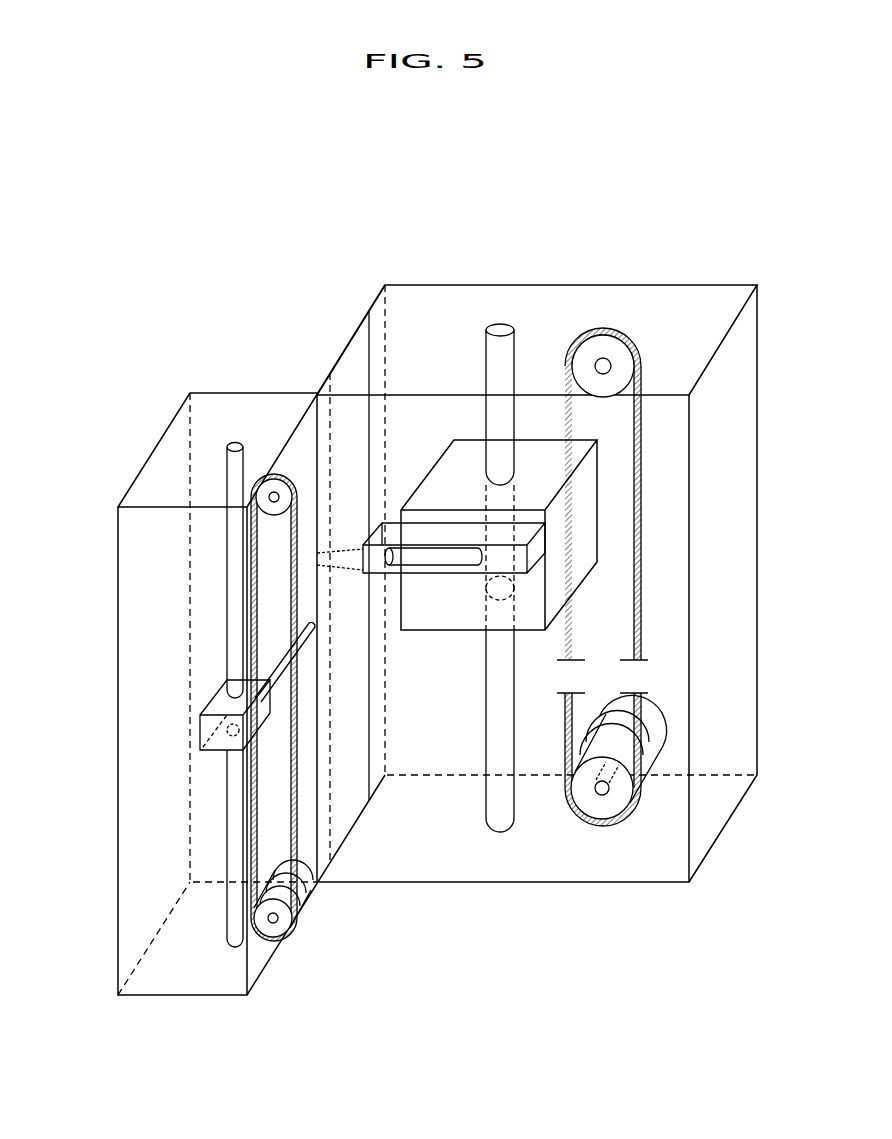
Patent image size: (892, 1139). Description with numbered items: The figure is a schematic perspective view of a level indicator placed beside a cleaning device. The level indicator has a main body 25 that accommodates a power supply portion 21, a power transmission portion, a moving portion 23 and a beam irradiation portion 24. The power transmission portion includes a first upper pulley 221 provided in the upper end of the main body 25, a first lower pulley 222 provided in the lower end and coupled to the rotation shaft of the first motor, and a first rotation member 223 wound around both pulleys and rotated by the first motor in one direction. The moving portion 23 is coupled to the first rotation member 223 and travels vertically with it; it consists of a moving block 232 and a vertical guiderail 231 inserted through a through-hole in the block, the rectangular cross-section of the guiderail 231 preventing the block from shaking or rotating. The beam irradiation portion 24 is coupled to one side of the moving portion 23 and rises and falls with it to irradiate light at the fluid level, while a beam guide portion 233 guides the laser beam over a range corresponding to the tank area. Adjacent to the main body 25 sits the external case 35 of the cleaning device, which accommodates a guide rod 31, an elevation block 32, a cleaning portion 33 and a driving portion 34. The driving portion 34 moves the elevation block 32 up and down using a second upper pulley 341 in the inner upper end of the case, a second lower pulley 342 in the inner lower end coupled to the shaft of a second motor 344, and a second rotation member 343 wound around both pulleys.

The power supply portion 21 is at (655, 732).
The first upper pulley 221 is at (602, 345).
The first lower pulley 222 is at (617, 800).
The first rotation member 223 is at (640, 495).
The moving portion 23 is at (429, 516).
The guiderail 231 is at (484, 350).
The moving block 232 is at (433, 478).
The beam guide portion 233 is at (373, 517).
The beam irradiation portion 24 is at (465, 563).
The main body 25 is at (715, 285).
The guide rod 31 is at (235, 923).
The elevation block 32 is at (205, 732).
The cleaning portion 33 is at (280, 663).
The driving portion 34 is at (424, 703).
The second upper pulley 341 is at (272, 483).
The second lower pulley 342 is at (272, 930).
The second rotation member 343 is at (297, 830).
The second motor 344 is at (303, 887).
The external case 35 is at (118, 967).